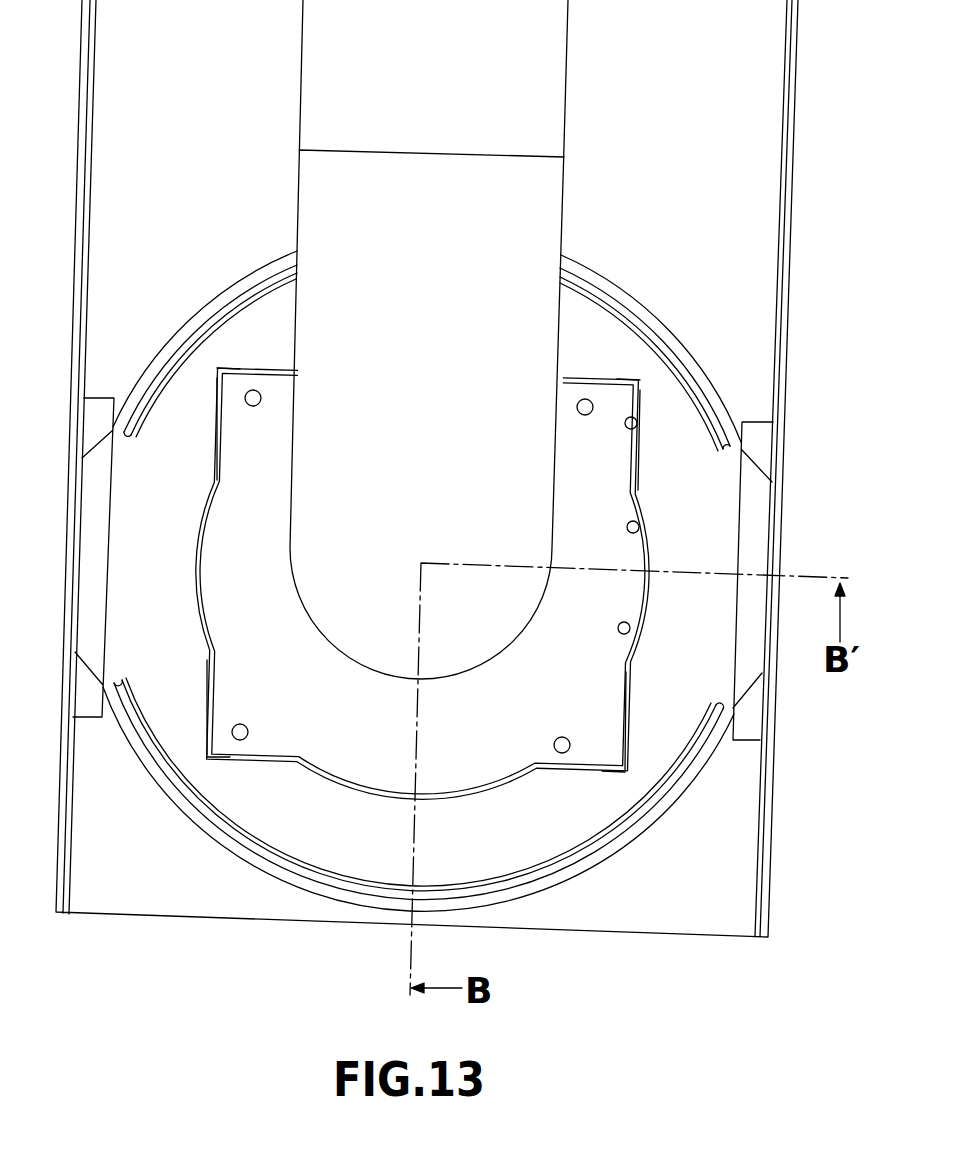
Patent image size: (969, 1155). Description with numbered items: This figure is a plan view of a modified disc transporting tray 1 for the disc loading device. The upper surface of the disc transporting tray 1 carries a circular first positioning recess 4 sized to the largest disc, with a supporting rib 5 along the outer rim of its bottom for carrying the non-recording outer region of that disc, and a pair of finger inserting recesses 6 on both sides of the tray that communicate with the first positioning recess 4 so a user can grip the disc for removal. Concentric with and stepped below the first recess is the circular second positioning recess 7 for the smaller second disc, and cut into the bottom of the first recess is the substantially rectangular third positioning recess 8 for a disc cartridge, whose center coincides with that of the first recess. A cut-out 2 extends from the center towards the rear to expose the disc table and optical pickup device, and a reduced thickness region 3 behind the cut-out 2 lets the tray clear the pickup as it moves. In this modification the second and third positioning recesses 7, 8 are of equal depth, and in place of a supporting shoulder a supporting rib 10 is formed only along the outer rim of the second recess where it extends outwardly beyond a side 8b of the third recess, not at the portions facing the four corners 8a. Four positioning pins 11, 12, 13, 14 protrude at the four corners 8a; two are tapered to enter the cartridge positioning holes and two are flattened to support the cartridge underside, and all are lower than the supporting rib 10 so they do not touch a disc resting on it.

The disc transporting tray 1 is at (798, 209).
The cut-out 2 is at (566, 197).
The reduced thickness region 3 is at (553, 83).
The first positioning recess 4 is at (680, 347).
The supporting rib 5 is at (620, 305).
The finger inserting recess 6 is at (758, 508).
The second positioning recess 7 is at (628, 527).
The third positioning recess 8 is at (638, 458).
The corner of the third positioning recess 8a is at (228, 430).
The side of the third positioning recess 8b is at (262, 368).
The supporting rib 10 is at (630, 621).
The positioning pin 11 is at (578, 403).
The positioning pin 12 is at (560, 737).
The positioning pin 13 is at (261, 398).
The positioning pin 14 is at (243, 724).